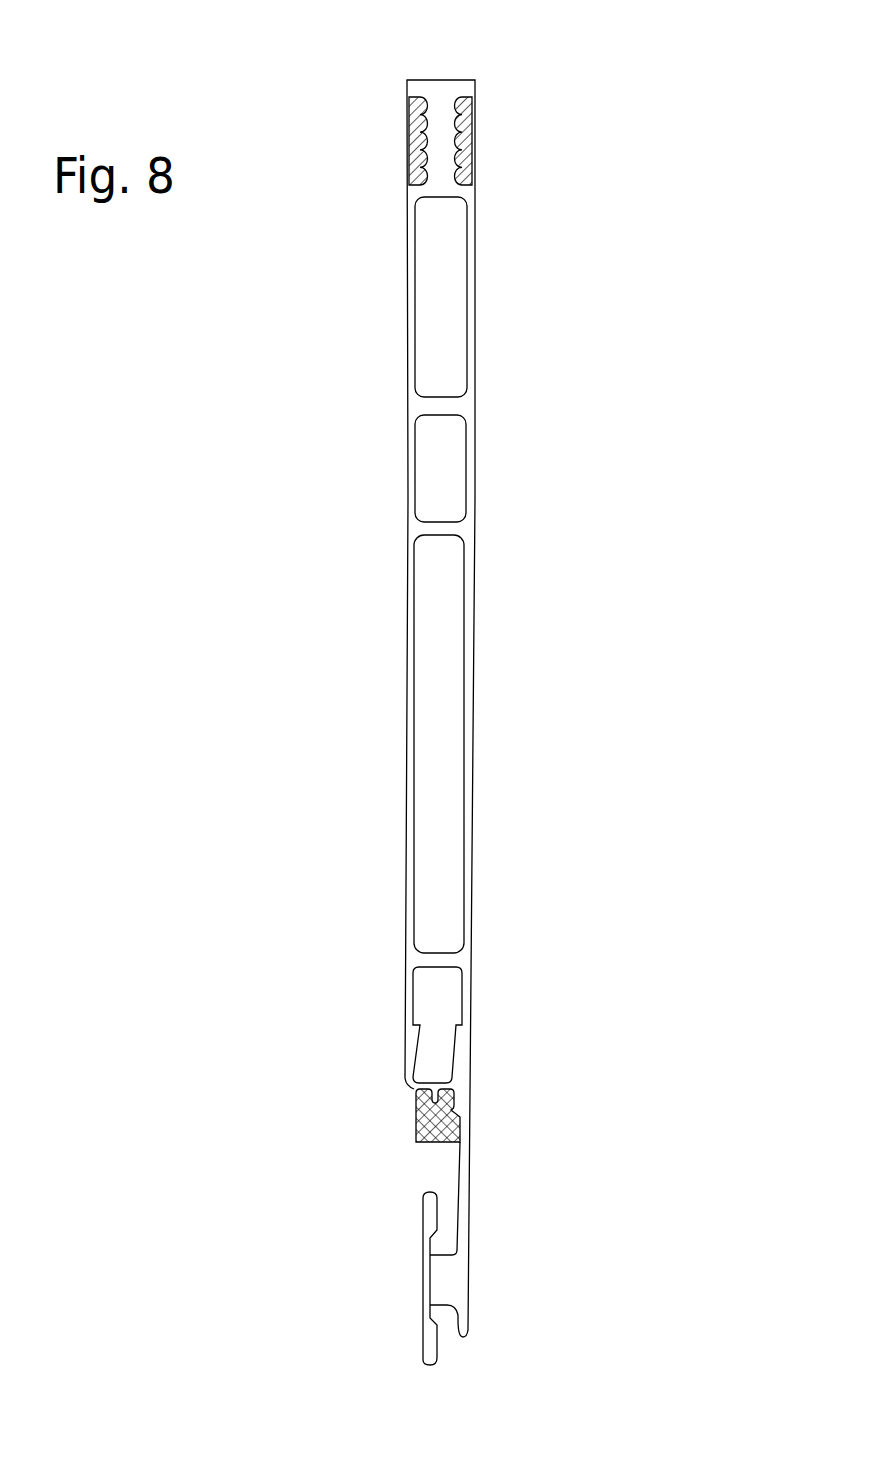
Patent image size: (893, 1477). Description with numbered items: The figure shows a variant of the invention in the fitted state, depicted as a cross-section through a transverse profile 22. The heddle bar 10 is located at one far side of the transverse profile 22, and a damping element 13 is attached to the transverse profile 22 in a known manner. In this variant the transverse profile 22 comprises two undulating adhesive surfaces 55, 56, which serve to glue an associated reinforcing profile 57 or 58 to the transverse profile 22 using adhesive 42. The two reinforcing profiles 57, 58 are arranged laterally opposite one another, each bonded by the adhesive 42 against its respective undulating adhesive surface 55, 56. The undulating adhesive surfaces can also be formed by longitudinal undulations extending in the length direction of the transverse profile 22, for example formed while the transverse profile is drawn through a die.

The heddle bar 10 is at (430, 1210).
The damping element 13 is at (416, 1133).
The transverse profile 22 is at (462, 527).
The adhesive 42 is at (442, 148).
The undulating adhesive surface 55 is at (415, 105).
The undulating adhesive surface 56 is at (453, 133).
The reinforcing profile 57 is at (412, 156).
The reinforcing profile 58 is at (472, 165).